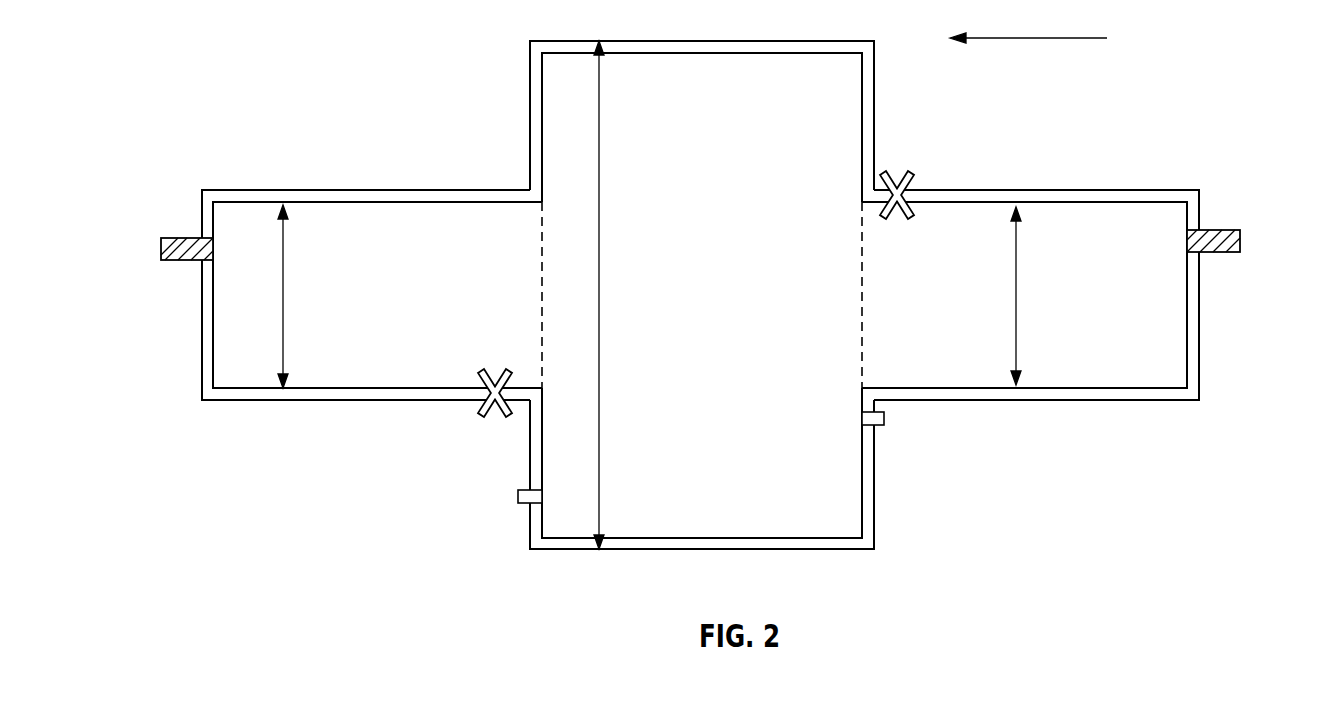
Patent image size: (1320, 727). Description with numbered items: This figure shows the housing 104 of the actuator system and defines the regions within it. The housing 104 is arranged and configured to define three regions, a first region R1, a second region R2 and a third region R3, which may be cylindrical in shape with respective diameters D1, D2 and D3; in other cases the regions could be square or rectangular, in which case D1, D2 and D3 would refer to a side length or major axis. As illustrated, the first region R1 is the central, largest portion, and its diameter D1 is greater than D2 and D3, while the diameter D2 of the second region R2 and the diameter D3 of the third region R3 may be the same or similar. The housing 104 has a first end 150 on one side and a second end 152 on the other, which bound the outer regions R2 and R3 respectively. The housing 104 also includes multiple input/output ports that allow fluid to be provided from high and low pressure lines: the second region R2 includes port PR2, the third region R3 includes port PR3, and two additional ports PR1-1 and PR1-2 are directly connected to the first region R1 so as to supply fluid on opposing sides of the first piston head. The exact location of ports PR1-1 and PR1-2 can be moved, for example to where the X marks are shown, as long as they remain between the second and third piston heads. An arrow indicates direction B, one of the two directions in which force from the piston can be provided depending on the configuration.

The housing 104 is at (874, 97).
The first end 150 is at (202, 307).
The second end 152 is at (1199, 352).
The port PR2 is at (205, 250).
The port PR3 is at (1195, 243).
The port PR1-1 is at (527, 495).
The port PR1-2 is at (868, 420).
The diameter D1 is at (599, 207).
The diameter D2 is at (283, 252).
The diameter D3 is at (1016, 238).
The first region R1 is at (676, 278).
The second region R2 is at (361, 318).
The third region R3 is at (1076, 310).
The direction B is at (1022, 38).